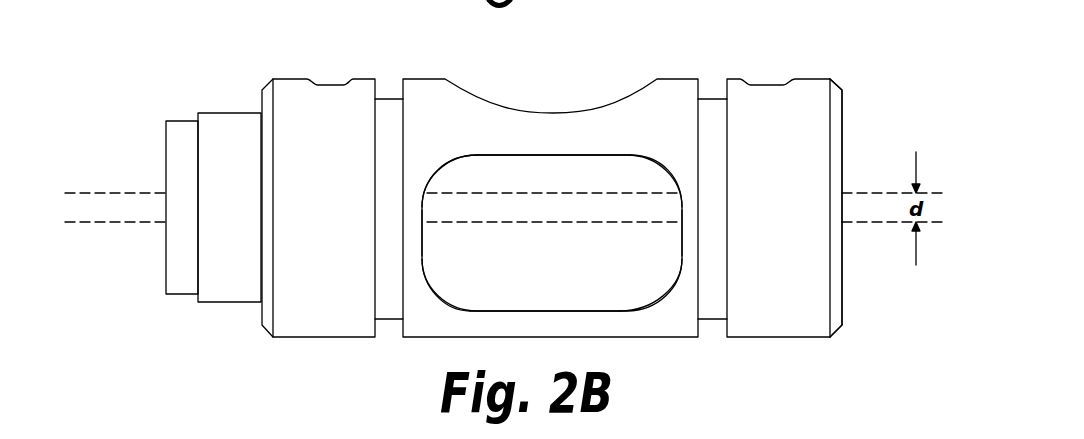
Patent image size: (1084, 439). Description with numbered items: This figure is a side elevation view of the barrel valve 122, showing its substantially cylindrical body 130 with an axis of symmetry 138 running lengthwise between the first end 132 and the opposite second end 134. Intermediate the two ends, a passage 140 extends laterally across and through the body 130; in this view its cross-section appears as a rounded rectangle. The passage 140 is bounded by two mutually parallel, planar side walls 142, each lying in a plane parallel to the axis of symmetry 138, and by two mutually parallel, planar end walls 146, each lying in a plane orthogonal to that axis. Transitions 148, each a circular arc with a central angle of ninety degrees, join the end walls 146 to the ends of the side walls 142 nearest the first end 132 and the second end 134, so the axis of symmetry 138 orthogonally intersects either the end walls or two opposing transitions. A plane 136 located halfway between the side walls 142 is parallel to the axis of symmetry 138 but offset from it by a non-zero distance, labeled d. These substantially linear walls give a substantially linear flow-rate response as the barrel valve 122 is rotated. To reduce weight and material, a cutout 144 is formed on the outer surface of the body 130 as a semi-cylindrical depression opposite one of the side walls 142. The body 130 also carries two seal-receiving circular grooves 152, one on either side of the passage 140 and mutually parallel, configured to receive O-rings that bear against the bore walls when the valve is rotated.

The barrel valve 122 is at (238, 113).
The body 130 is at (792, 315).
The first end 132 is at (842, 115).
The second end 134 is at (166, 173).
The plane 136 is at (860, 222).
The axis of symmetry 138 is at (865, 193).
The passage 140 is at (550, 185).
The side walls 142 is at (602, 155).
The cutout 144 is at (553, 112).
The end walls 146 is at (422, 232).
The transitions 148 is at (438, 168).
The seal-receiving circular groove 152 is at (392, 99).